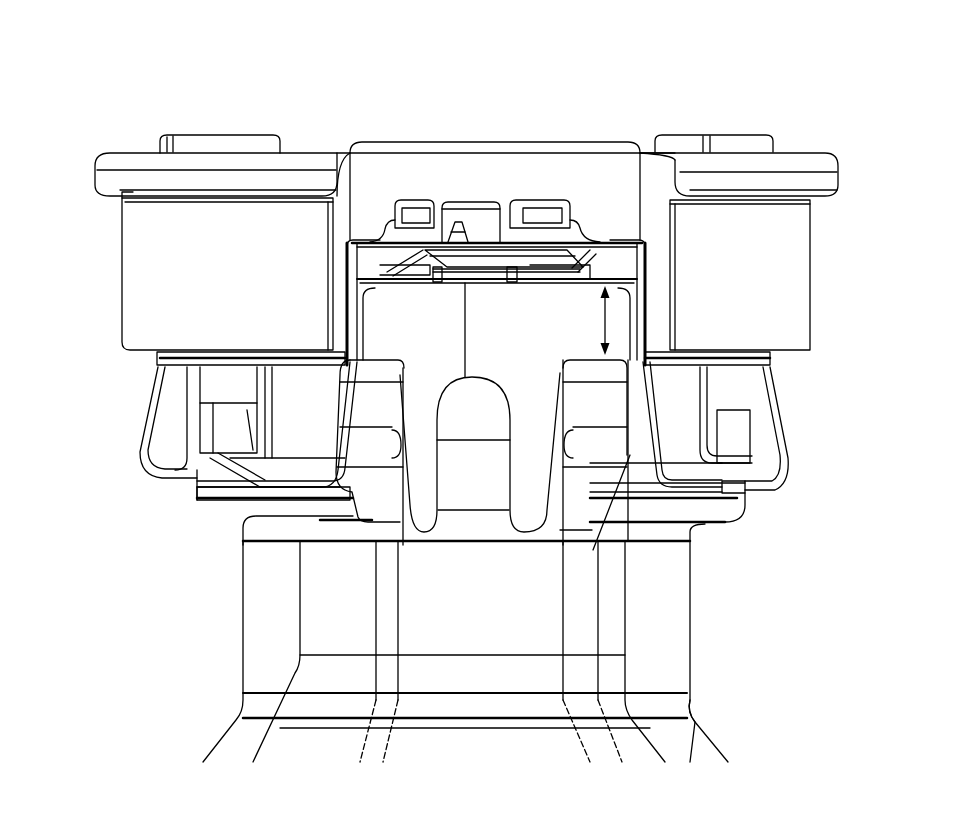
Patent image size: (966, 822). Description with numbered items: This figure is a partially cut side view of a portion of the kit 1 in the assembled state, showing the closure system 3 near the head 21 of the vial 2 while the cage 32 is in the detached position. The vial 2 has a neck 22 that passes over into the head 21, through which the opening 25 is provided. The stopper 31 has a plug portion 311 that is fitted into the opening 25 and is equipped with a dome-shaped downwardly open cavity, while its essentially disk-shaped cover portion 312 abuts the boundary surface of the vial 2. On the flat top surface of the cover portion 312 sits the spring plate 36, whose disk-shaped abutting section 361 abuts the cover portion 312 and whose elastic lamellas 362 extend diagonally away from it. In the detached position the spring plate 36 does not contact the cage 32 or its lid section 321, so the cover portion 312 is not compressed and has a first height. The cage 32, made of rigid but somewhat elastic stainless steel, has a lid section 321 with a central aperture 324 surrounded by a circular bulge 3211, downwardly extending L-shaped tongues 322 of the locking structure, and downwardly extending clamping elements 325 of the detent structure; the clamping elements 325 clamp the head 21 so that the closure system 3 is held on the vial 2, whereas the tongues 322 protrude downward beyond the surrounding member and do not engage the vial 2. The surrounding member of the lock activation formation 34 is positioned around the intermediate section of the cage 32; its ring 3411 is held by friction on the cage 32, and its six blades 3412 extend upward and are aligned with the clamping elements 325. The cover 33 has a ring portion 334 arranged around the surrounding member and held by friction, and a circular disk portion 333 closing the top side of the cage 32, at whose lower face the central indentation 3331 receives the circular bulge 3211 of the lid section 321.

The kit 1 is at (175, 577).
The vial 2 is at (210, 689).
The head 21 is at (718, 513).
The neck 22 is at (665, 644).
The opening 25 is at (486, 478).
The closure system 3 is at (822, 348).
The stopper 31 is at (465, 576).
The plug portion 311 is at (535, 407).
The cover portion 312 is at (387, 309).
The cage 32 is at (130, 396).
The lid section 321 is at (356, 142).
The circular bulge 3211 is at (412, 207).
The tongue 322 is at (152, 438).
The central aperture 324 is at (458, 213).
The clamping element 325 is at (220, 440).
The cover 33 is at (832, 493).
The disk portion 333 is at (622, 148).
The central indentation 3331 is at (547, 207).
The ring portion 334 is at (135, 242).
The lock activation formation 34 is at (780, 130).
The ring 3411 is at (338, 150).
The blade 3412 is at (200, 135).
The spring plate 36 is at (620, 254).
The abutting section 361 is at (655, 281).
The lamella 362 is at (593, 257).